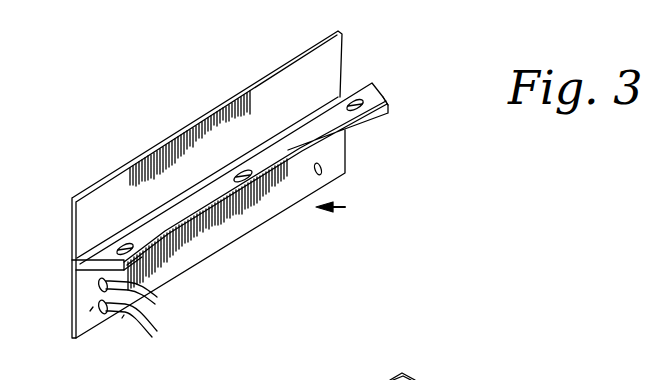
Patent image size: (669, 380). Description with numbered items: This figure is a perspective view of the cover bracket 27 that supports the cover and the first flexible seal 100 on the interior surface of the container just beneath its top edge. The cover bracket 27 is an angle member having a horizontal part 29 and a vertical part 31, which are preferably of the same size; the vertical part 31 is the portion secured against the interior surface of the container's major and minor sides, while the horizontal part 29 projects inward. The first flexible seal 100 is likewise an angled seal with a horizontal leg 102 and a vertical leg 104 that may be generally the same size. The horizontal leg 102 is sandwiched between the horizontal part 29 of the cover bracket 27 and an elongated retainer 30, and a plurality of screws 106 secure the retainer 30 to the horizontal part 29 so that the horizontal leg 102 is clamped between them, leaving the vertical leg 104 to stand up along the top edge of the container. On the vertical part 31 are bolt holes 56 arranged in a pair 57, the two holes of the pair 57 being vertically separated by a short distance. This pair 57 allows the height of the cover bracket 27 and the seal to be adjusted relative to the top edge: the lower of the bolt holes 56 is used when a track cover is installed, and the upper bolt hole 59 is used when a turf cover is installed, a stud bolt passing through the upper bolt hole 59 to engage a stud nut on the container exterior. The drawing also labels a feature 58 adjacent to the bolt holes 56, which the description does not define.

The brush seal assembly 27 is at (345, 207).
The rail channel 29 is at (389, 106).
The mounting bar 30 is at (247, 166).
The lower skirt panel 31 is at (203, 262).
The second hook tube 56 is at (140, 323).
The lower pin 57 is at (90, 312).
The pin 58 is at (122, 319).
The first hook tube 59 is at (138, 295).
The upper brush 100 is at (198, 112).
The bottom flange 102 is at (90, 262).
The backing plate 104 is at (110, 190).
The mounting hole 106 is at (358, 104).